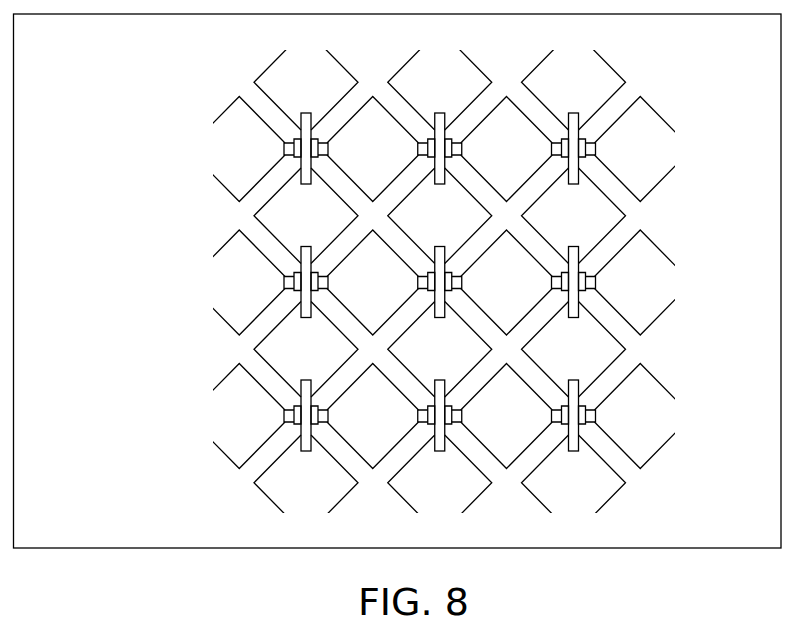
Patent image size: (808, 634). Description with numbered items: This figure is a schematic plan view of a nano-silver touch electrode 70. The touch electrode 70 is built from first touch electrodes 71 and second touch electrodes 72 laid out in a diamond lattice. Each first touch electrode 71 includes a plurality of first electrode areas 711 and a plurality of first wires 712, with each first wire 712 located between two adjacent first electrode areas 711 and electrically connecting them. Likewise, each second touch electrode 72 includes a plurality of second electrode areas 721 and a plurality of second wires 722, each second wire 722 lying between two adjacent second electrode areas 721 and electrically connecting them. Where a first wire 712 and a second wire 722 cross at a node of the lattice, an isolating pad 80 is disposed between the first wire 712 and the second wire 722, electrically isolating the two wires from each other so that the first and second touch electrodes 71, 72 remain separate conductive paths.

The nano-silver touch electrode 70 is at (95, 87).
The first touch electrode 71 is at (150, 63).
The first electrode area 711 is at (226, 133).
The first wire 712 is at (292, 141).
The second touch electrode 72 is at (150, 212).
The second electrode area 721 is at (290, 201).
The second wire 722 is at (301, 176).
The isolating pad 80 is at (318, 139).